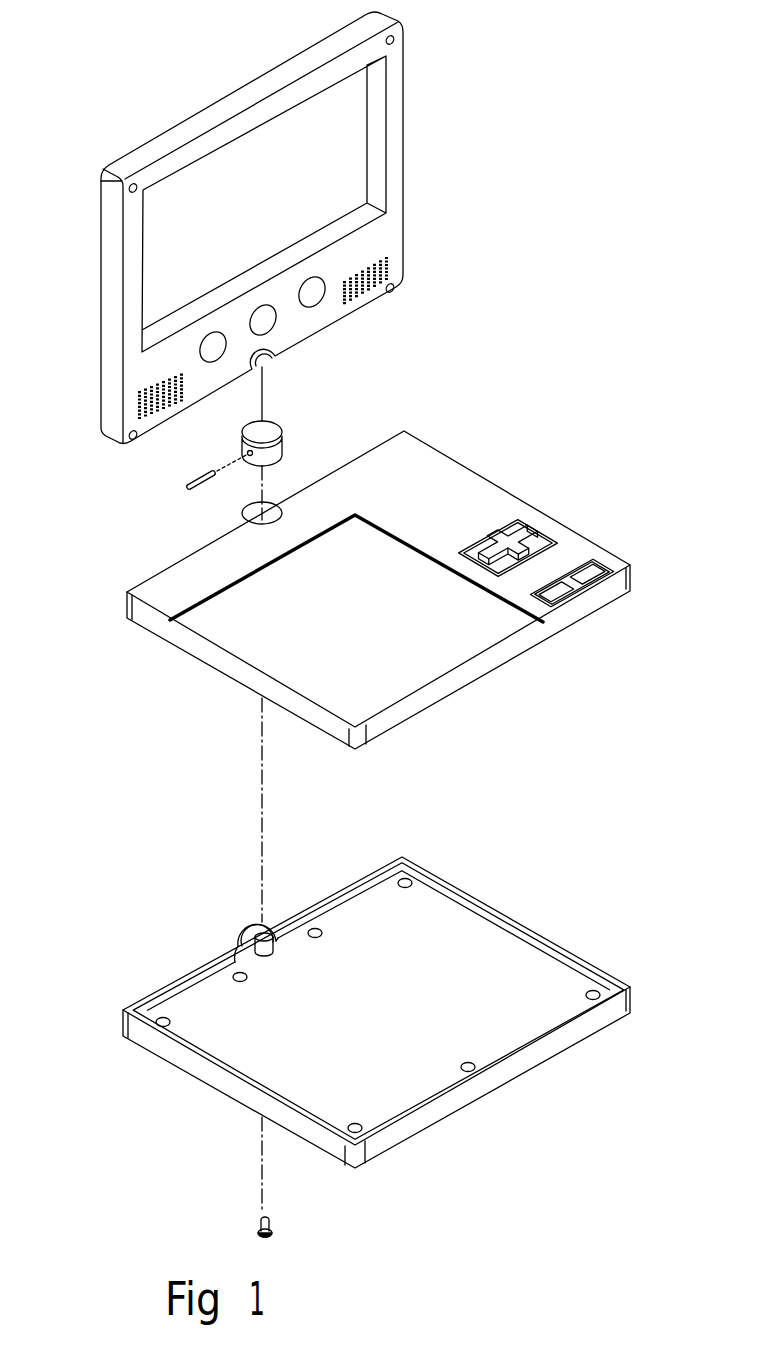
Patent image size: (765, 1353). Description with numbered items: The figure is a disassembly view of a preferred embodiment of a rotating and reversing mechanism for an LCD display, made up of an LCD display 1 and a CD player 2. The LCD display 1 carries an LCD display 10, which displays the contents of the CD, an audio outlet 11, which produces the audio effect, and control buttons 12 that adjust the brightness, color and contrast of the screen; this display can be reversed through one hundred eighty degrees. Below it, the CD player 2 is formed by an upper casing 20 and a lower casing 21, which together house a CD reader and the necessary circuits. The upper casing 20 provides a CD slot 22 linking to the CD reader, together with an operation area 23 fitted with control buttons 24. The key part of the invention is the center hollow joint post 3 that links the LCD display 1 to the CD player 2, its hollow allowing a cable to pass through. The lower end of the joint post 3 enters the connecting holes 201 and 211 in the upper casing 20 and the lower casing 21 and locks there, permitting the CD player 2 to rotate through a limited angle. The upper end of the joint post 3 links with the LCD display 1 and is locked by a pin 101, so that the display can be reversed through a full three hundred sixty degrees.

The LCD display 1 is at (410, 164).
The LCD display 10 is at (363, 118).
The audio outlet 11 is at (390, 270).
The control buttons 12 is at (314, 303).
The center hollow joint post 3 is at (291, 438).
The pin 101 is at (186, 478).
The connecting hole 201 is at (243, 515).
The CD player 2 is at (148, 683).
The upper casing 20 is at (387, 604).
The CD slot 22 is at (393, 705).
The operation area 23 is at (597, 557).
The control buttons 24 is at (587, 583).
The lower casing 21 is at (376, 1012).
The connecting hole 211 is at (237, 932).